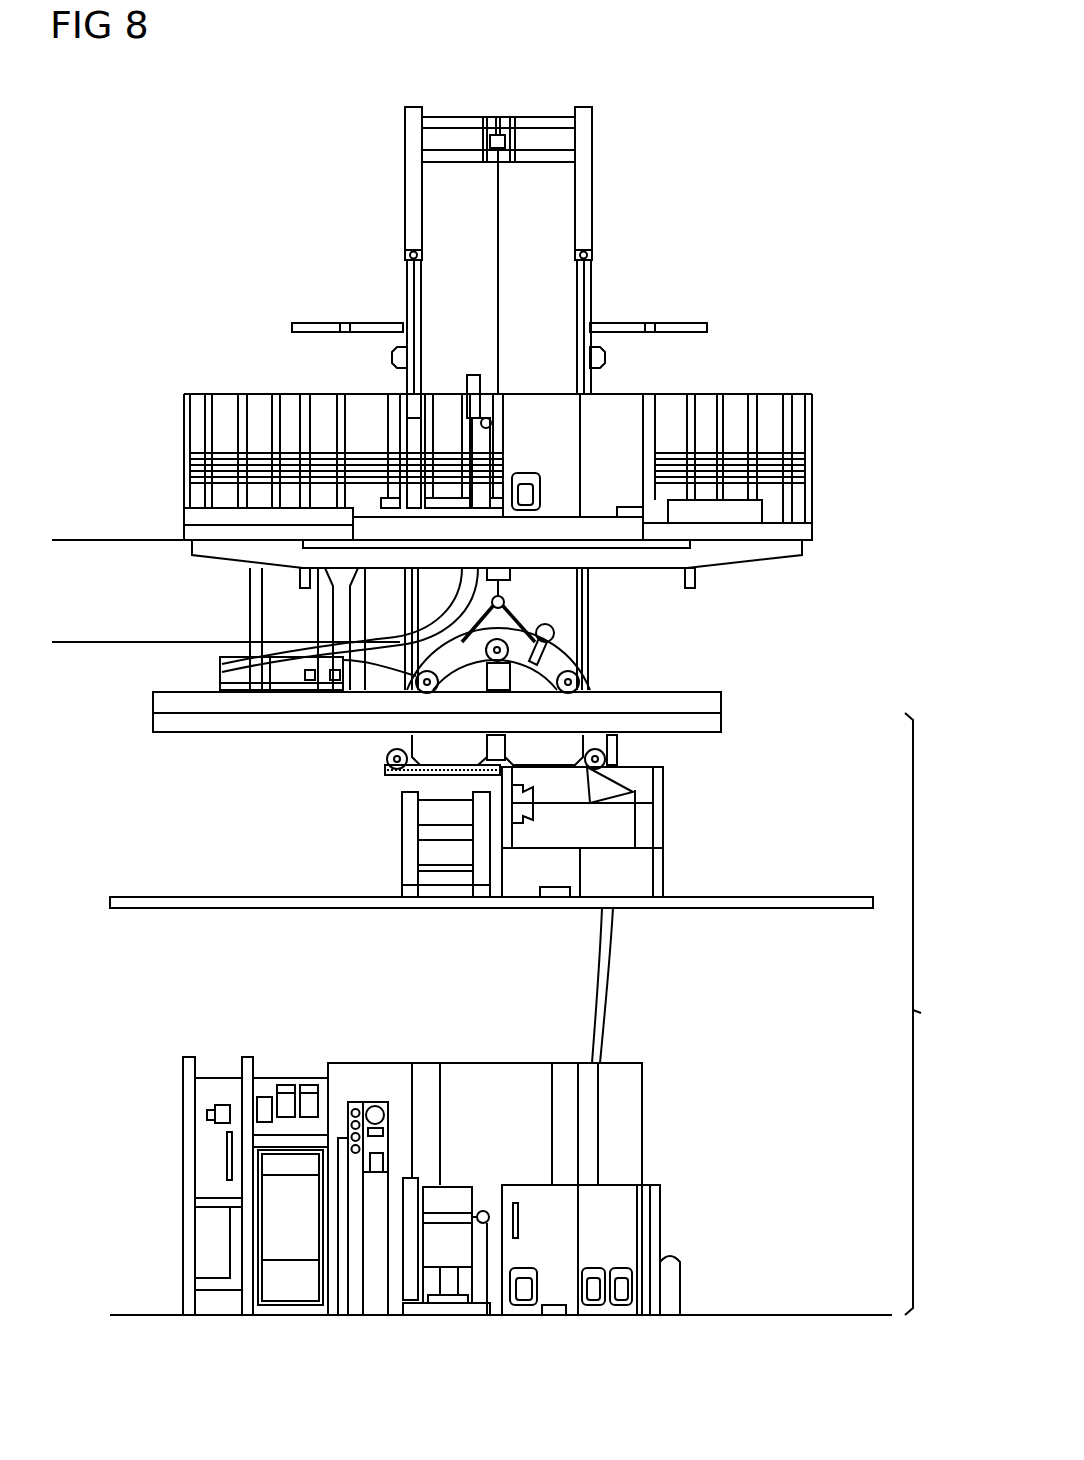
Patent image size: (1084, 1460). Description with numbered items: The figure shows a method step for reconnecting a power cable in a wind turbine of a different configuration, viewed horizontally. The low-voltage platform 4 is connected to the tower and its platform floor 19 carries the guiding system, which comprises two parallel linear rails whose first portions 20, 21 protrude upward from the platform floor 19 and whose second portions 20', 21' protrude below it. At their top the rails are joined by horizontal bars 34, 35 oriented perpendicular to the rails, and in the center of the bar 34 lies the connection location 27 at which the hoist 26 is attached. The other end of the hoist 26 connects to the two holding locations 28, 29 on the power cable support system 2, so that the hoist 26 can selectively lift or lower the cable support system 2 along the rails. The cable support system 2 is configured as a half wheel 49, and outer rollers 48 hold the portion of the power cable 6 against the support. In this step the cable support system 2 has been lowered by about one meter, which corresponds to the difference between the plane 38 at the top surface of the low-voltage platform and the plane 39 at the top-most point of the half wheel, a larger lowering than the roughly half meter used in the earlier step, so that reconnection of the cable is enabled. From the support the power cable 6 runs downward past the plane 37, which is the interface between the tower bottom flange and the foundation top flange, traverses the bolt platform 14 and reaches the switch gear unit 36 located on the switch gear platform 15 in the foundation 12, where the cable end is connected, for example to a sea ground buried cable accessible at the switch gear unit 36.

The power cable support system 2 is at (552, 630).
The low-voltage platform 4 is at (838, 533).
The power cable 6 is at (600, 980).
The foundation 12 is at (933, 1014).
The bolt platform 14 is at (770, 910).
The switch gear platform 15 is at (770, 1318).
The platform floor 19 is at (745, 554).
The first portion of first linear rail 20 is at (381, 250).
The first portion of second linear rail 21 is at (616, 250).
The second portion of first linear rail 20' is at (311, 629).
The second portion of second linear rail 21' is at (625, 629).
The hoist 26 is at (498, 206).
The connection location 27 is at (493, 150).
The holding location 28 is at (343, 658).
The holding location 29 is at (540, 630).
The bar 34 is at (447, 117).
The bar 35 is at (546, 155).
The switch gear unit 36 is at (665, 1255).
The plane 37 is at (722, 703).
The plane 38 is at (98, 540).
The plane 39 is at (98, 641).
The outer roller 48 is at (555, 633).
The half wheel 49 is at (392, 742).